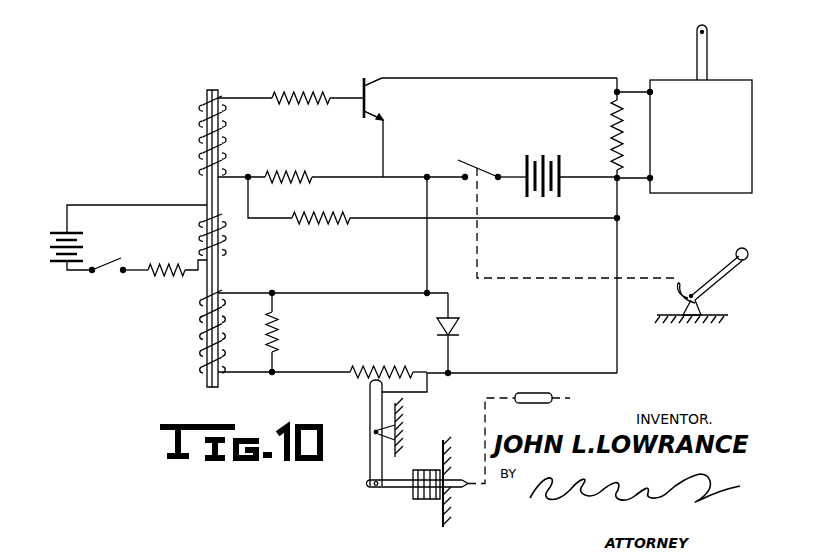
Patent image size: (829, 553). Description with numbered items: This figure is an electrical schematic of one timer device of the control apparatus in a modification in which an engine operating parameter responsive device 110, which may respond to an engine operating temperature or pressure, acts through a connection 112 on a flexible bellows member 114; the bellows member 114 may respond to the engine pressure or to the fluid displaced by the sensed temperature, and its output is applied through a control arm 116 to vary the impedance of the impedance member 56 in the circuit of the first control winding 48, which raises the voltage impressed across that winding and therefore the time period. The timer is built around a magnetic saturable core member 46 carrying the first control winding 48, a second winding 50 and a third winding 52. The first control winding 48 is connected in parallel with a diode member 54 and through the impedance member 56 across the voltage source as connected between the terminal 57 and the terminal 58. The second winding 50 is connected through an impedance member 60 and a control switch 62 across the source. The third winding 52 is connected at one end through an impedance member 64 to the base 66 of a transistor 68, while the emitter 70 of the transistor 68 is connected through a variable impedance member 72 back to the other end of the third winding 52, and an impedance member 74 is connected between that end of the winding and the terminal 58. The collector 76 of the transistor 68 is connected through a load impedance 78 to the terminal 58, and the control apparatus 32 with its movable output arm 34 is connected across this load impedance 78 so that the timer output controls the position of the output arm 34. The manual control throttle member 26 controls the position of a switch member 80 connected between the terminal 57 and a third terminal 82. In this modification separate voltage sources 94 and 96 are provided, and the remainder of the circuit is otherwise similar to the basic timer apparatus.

The manual control throttle member 26 is at (745, 248).
The control apparatus 32 is at (691, 195).
The movable output arm 34 is at (697, 54).
The magnetic saturable core member 46 is at (214, 92).
The first control winding 48 is at (203, 343).
The second winding 50 is at (224, 232).
The third winding 52 is at (203, 143).
The diode member 54 is at (456, 328).
The impedance member 56 is at (404, 350).
The terminal 57 is at (499, 182).
The terminal 58 is at (613, 181).
The impedance member 60 is at (162, 284).
The control switch 62 is at (101, 266).
The impedance member 64 is at (296, 92).
The base 66 is at (364, 80).
The transistor 68 is at (368, 98).
The emitter 70 is at (376, 119).
The variable impedance member 72 is at (274, 172).
The impedance member 74 is at (311, 226).
The collector 76 is at (376, 78).
The load impedance 78 is at (611, 128).
The switch member 80 is at (471, 164).
The third terminal 82 is at (464, 182).
The voltage source 94 is at (54, 268).
The voltage source 96 is at (541, 157).
The engine operating parameter responsive device 110 is at (570, 398).
The connection 112 is at (490, 416).
The flexible bellows member 114 is at (425, 500).
The control arm 116 is at (368, 403).